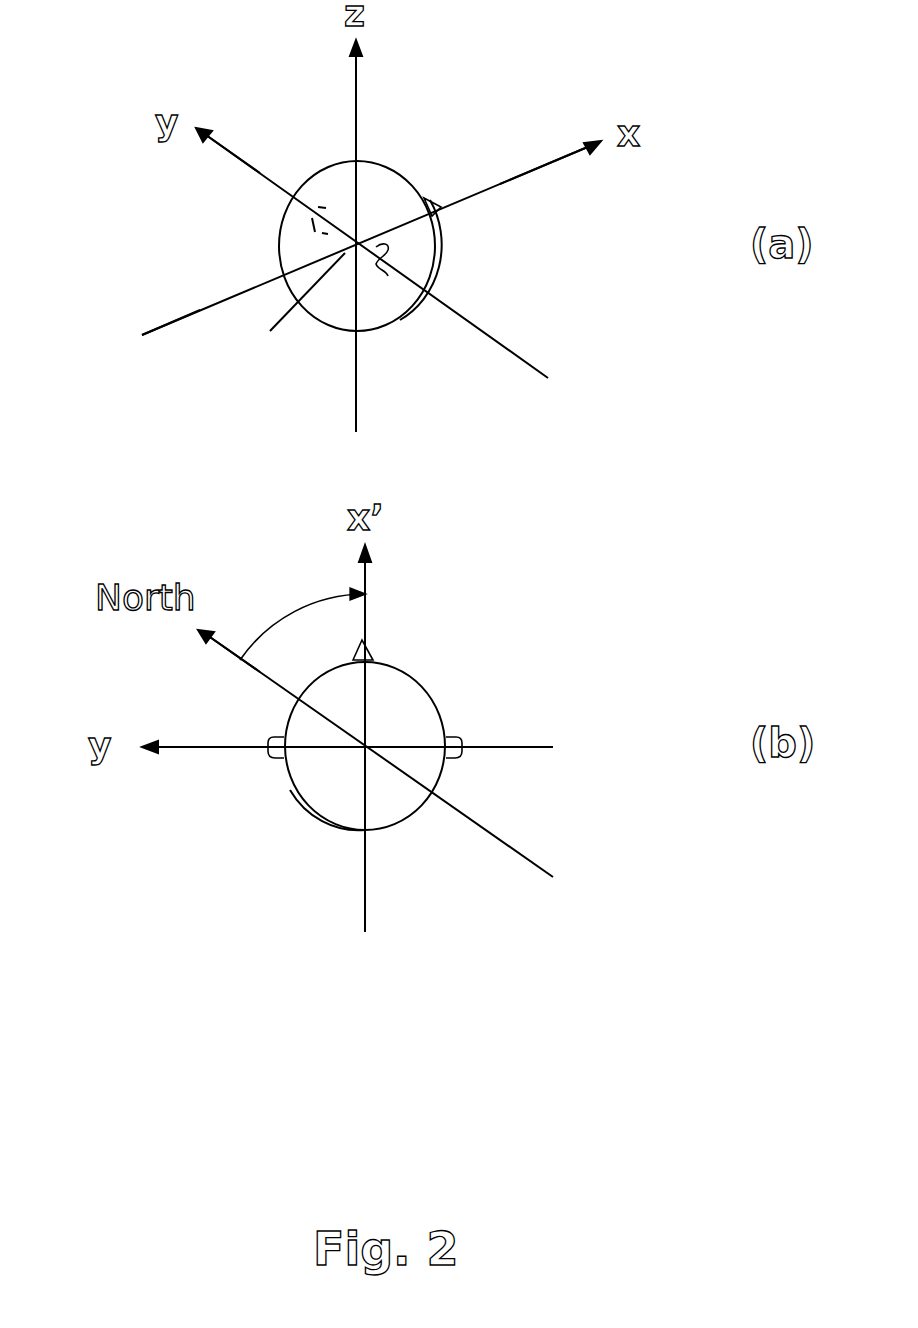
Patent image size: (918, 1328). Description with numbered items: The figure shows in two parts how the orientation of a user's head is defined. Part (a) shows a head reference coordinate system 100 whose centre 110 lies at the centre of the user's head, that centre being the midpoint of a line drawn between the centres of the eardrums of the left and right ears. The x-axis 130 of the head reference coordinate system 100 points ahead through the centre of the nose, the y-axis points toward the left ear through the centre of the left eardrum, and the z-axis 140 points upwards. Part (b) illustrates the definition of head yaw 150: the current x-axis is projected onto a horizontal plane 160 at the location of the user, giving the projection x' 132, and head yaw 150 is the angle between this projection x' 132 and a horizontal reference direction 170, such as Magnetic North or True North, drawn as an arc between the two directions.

The head reference coordinate system 100 is at (128, 334).
The centre (midpoint) 110 is at (286, 304).
The x-axis 130 is at (549, 166).
The projection x' of the x-axis 132 is at (365, 566).
The z-axis 140 is at (356, 72).
The head yaw 150 is at (310, 598).
The horizontal plane 160 is at (575, 630).
The horizontal reference direction 170 is at (223, 650).